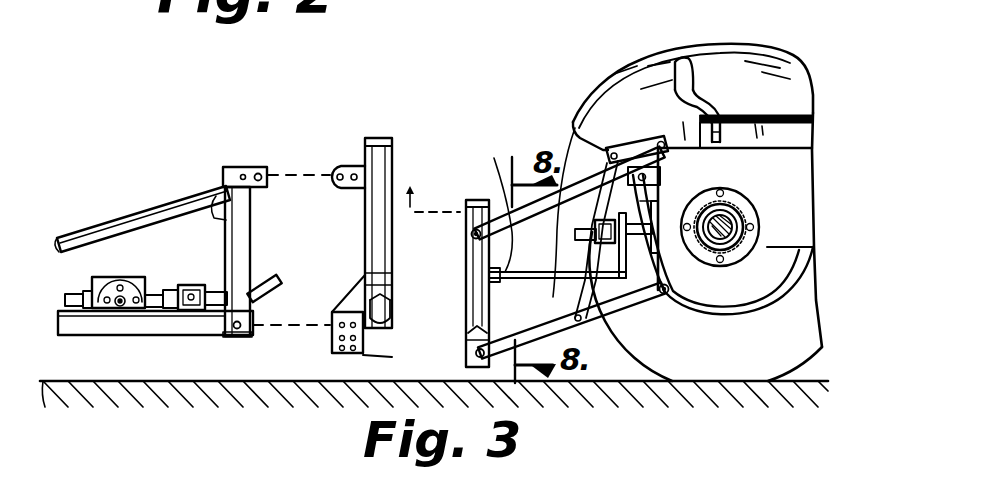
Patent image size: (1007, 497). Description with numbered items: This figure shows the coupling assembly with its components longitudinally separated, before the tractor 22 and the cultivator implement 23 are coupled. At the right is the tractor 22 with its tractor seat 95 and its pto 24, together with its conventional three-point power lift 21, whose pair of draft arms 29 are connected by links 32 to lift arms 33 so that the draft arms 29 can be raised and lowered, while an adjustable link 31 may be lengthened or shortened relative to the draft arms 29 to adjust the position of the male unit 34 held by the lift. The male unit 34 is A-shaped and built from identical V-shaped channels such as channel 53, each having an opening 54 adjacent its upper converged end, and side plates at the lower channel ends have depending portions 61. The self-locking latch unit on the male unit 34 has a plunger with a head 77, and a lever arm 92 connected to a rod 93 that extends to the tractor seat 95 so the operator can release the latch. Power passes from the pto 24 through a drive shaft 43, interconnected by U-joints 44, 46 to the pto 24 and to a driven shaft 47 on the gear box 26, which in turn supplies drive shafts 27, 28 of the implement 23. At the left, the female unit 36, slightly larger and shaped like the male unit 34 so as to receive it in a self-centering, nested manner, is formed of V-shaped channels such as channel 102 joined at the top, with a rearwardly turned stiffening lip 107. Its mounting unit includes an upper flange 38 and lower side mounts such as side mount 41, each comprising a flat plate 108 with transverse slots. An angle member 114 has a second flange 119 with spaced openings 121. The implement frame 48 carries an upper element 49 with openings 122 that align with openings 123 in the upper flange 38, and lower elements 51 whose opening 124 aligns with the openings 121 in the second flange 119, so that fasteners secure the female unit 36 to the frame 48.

The three-point power lift 21 is at (506, 138).
The tractor 22 is at (648, 60).
The cultivator implement 23 is at (128, 190).
The pto 24 is at (661, 203).
The gear box 26 is at (131, 277).
The drive shaft 27 is at (118, 310).
The drive shaft 28 is at (65, 296).
The draft arms 29 is at (647, 307).
The adjustable link 31 is at (525, 212).
The links 32 is at (636, 146).
The lift arms 33 is at (606, 335).
The male unit 34 is at (464, 186).
The female unit 36 is at (399, 125).
The upper flange 38 is at (339, 187).
The side mount 41 is at (350, 368).
The drive shaft 43 is at (275, 278).
The U-joint 44 is at (606, 185).
The U-joint 46 is at (192, 285).
The driven shaft 47 is at (152, 308).
The frame 48 is at (215, 191).
The upper element 49 is at (259, 173).
The lower elements 51 is at (226, 334).
The V-shaped channel 53 is at (467, 308).
The opening 54 is at (468, 233).
The depending portion 61 is at (472, 355).
The head 77 is at (466, 273).
The lever arm 92 is at (503, 272).
The rod 93 is at (556, 262).
The tractor seat 95 is at (693, 70).
The V-shaped channel 102 is at (368, 140).
The stiffening lip 107 is at (364, 235).
The flat plate 108 is at (364, 274).
The angle member 114 is at (327, 314).
The second flange 119 is at (392, 357).
The openings 121 is at (333, 331).
The openings 122 is at (243, 173).
The openings 123 is at (352, 173).
The opening 124 is at (238, 331).